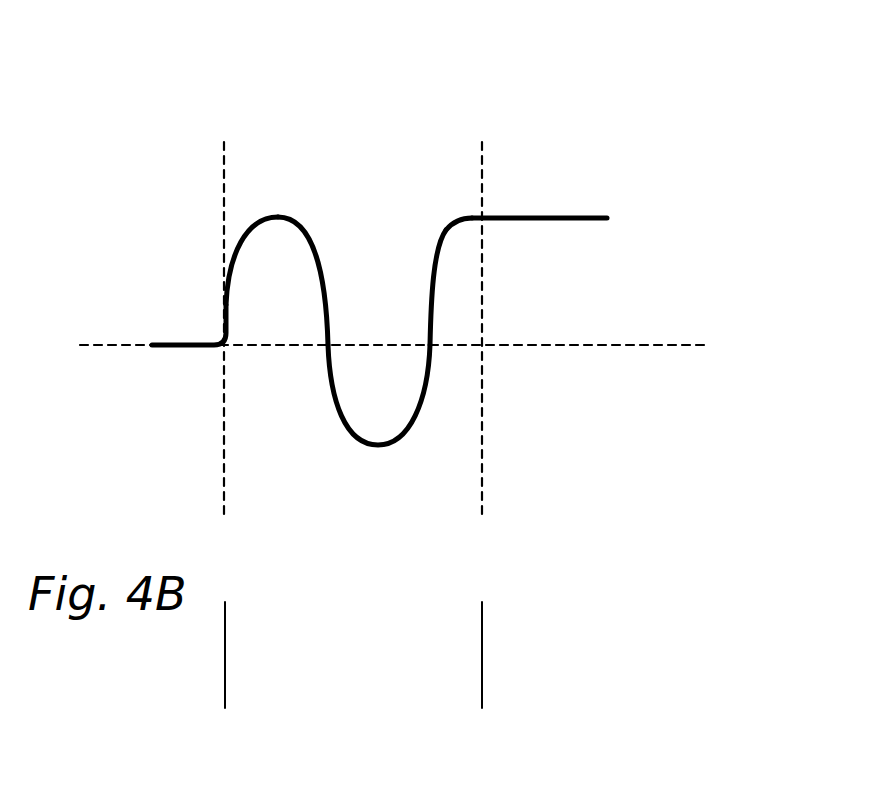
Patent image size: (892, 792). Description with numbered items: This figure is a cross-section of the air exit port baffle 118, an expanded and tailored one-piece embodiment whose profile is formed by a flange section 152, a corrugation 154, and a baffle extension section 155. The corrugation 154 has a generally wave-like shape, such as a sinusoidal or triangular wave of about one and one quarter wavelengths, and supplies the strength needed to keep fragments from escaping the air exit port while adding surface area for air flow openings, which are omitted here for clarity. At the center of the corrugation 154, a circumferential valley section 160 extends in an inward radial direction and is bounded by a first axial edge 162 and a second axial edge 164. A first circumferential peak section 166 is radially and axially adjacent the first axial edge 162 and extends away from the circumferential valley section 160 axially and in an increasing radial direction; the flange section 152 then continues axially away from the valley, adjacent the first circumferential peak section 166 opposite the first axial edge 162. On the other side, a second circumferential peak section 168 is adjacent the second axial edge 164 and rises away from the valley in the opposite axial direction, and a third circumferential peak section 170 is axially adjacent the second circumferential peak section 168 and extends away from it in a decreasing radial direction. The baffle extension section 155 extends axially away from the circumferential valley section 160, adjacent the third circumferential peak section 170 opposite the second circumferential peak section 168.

The air exit port baffle 118 is at (351, 302).
The flange section 152 is at (541, 223).
The corrugation 154 is at (480, 661).
The baffle extension section 155 is at (183, 342).
The circumferential valley section 160 is at (380, 448).
The first axial edge 162 is at (432, 352).
The second axial edge 164 is at (325, 350).
The first circumferential peak section 166 is at (458, 216).
The second circumferential peak section 168 is at (260, 252).
The third circumferential peak section 170 is at (248, 236).